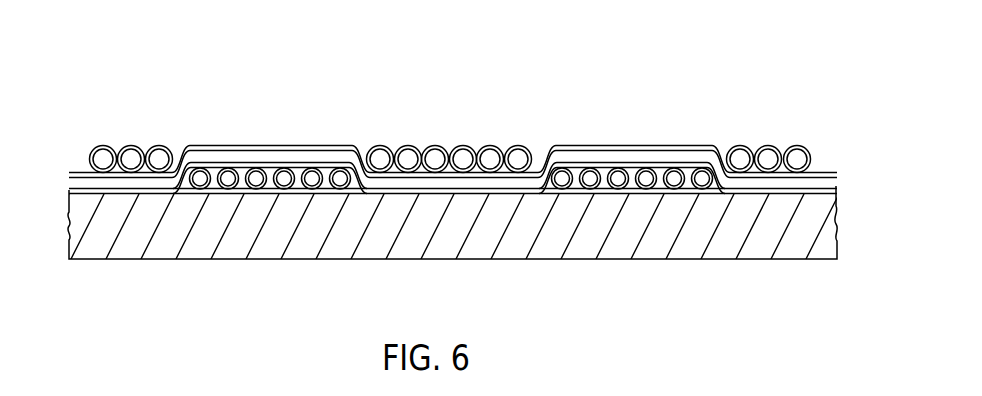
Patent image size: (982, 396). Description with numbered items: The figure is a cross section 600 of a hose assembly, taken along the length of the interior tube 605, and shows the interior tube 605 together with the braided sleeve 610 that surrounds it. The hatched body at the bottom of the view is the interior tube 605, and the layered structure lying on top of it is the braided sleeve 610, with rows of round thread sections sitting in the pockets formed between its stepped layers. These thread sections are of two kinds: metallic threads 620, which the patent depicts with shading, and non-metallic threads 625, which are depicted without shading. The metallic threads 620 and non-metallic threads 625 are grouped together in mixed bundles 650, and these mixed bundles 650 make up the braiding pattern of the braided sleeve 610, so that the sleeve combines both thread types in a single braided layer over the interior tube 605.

The cross section 600 is at (437, 173).
The interior tube 605 is at (133, 247).
The braided sleeve 610 is at (80, 165).
The metallic threads 620 is at (770, 146).
The non-metallic threads 625 is at (133, 146).
The mixed bundles 650 is at (458, 133).